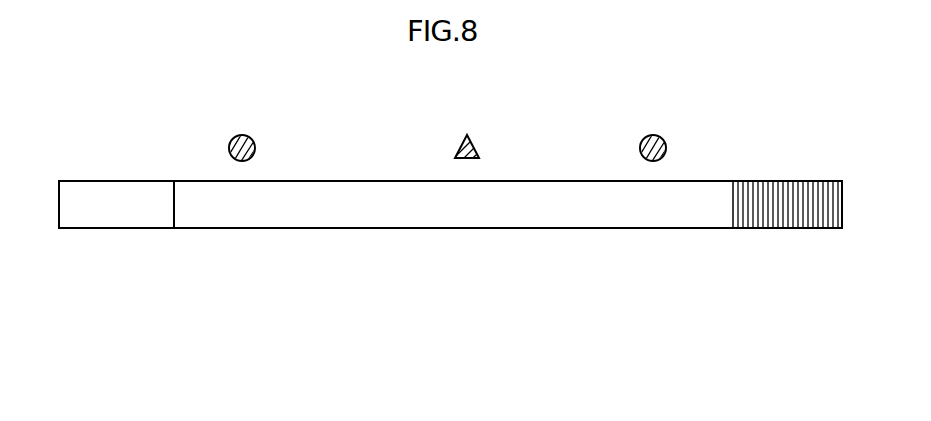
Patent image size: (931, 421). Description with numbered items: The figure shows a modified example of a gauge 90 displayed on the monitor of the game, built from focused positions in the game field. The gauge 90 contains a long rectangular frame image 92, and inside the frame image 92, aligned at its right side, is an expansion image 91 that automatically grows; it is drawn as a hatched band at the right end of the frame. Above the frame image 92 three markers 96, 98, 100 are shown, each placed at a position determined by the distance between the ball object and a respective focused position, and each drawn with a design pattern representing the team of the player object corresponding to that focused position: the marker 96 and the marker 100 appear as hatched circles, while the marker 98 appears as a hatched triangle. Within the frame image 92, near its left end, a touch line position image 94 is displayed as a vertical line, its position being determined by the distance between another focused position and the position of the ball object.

The gauge 90 is at (534, 268).
The expansion image 91 is at (786, 240).
The frame image 92 is at (362, 229).
The touch line position image 94 is at (176, 205).
The marker 96 is at (252, 133).
The marker 98 is at (470, 137).
The marker 100 is at (663, 135).